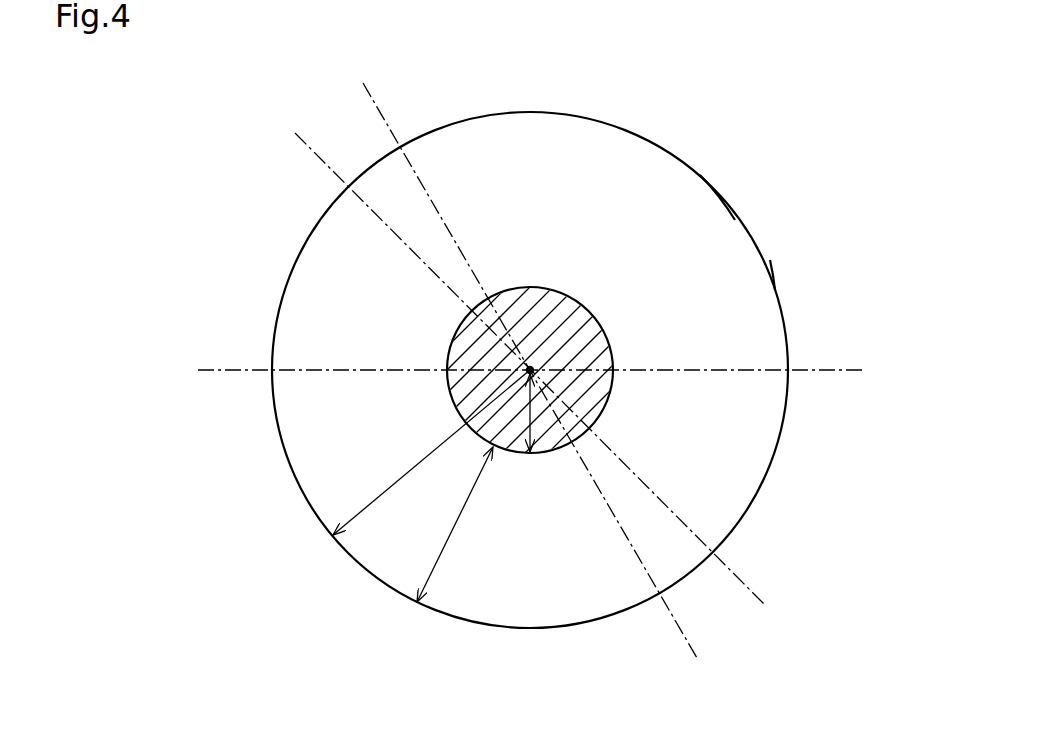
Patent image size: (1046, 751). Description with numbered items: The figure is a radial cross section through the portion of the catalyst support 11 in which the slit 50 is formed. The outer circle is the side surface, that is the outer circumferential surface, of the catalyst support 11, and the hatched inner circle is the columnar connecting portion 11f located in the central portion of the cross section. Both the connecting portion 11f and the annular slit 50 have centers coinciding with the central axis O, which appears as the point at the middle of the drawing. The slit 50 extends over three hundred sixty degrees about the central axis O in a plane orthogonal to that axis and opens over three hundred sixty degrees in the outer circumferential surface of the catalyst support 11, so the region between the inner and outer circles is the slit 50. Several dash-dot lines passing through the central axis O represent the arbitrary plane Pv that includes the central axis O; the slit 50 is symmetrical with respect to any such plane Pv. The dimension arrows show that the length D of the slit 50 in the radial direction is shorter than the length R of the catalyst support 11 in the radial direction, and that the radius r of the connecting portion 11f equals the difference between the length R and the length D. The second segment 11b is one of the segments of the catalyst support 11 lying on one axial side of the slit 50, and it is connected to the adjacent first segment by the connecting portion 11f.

The catalyst support 11 is at (296, 263).
The second segment 11b is at (733, 222).
The connecting portion 11f is at (583, 313).
The slit 50 is at (758, 295).
The arbitrary plane Pv is at (220, 366).
The central axis O is at (532, 366).
The radius of the connecting portion r is at (529, 415).
The length of the catalyst support in the radial direction R is at (413, 468).
The length of the slit in the radial direction D is at (456, 523).